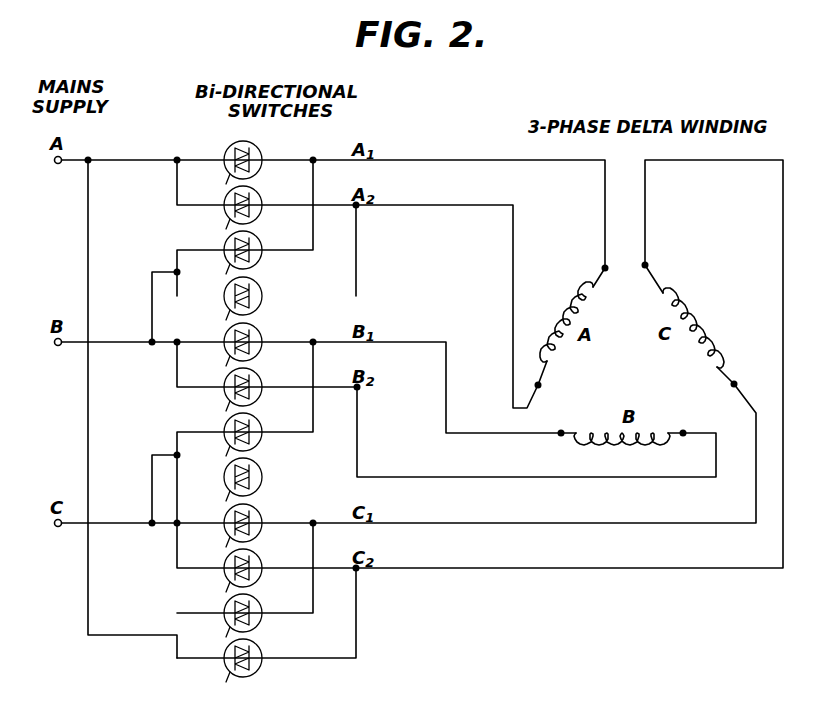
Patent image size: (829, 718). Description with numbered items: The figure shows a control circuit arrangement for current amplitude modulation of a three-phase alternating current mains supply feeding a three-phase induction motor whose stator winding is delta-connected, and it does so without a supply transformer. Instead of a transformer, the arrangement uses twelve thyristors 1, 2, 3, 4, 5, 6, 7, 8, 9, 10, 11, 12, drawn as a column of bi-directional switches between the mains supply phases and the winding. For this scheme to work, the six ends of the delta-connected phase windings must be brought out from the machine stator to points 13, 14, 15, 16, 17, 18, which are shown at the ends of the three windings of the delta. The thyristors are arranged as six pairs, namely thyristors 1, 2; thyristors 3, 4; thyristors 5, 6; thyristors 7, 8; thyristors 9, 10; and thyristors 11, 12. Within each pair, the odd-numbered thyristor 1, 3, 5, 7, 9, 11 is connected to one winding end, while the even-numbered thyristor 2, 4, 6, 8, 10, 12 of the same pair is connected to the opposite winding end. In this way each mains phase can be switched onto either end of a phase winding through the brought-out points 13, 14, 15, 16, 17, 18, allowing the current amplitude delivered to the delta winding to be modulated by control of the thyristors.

The thyristor 1 is at (256, 146).
The thyristor 2 is at (256, 191).
The thyristor 3 is at (256, 236).
The thyristor 4 is at (256, 282).
The thyristor 5 is at (256, 328).
The thyristor 6 is at (256, 373).
The thyristor 7 is at (256, 418).
The thyristor 8 is at (256, 463).
The thyristor 9 is at (256, 509).
The thyristor 10 is at (256, 554).
The thyristor 11 is at (256, 599).
The thyristor 12 is at (256, 644).
The winding end point 13 is at (603, 268).
The winding end point 14 is at (731, 385).
The winding end point 15 is at (563, 431).
The winding end point 16 is at (540, 383).
The winding end point 17 is at (647, 263).
The winding end point 18 is at (683, 431).